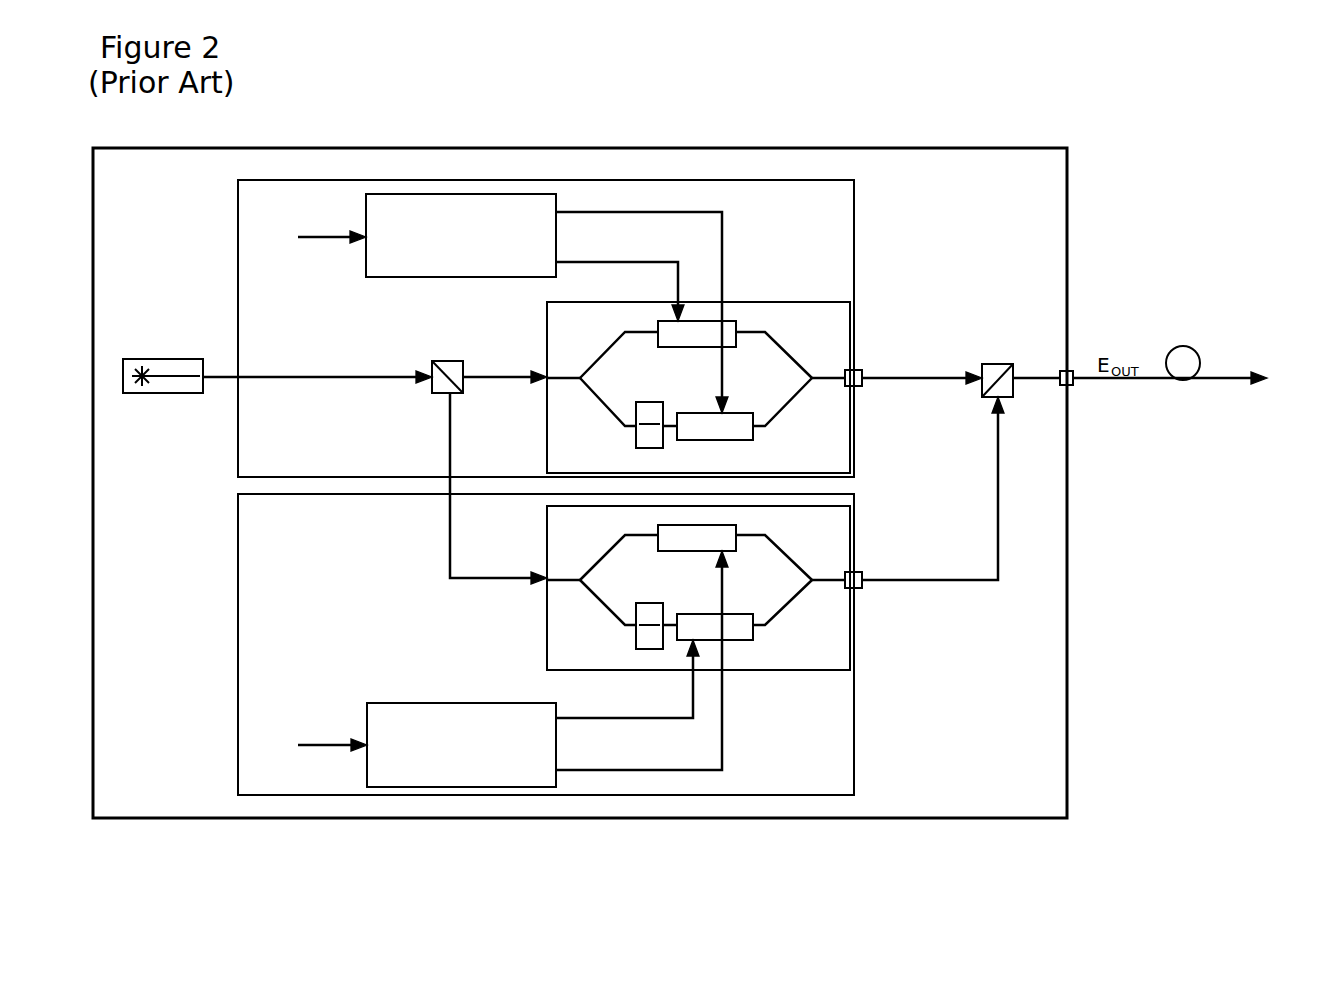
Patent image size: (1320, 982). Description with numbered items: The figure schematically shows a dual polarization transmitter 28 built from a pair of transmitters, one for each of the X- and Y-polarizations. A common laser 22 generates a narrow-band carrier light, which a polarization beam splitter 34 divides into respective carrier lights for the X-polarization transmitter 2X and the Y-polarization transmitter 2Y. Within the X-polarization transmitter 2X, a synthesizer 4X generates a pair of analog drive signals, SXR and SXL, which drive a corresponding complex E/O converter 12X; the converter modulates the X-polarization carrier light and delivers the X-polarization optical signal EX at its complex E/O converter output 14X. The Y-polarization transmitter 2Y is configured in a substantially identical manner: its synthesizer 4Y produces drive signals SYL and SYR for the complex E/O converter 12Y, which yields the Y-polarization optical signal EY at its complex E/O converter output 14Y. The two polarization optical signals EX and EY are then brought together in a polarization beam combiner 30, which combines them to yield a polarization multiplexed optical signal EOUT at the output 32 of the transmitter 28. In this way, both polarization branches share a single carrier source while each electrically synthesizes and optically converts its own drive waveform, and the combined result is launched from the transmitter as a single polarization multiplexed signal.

The dual polarization transmitter 28 is at (853, 148).
The common laser 22 is at (158, 359).
The polarization beam splitter 34 is at (448, 361).
The X-Polarization transmitter 2X is at (238, 228).
The Y-Polarization transmitter 2Y is at (238, 564).
The synthesizer 4X is at (461, 235).
The synthesizer 4Y is at (461, 745).
The complex E/O converter 12X is at (795, 302).
The complex E/O converter 12Y is at (795, 670).
The complex E/O converter output 14X is at (862, 386).
The complex E/O converter output 14Y is at (862, 588).
The polarization beam combiner 30 is at (993, 364).
The output 32 is at (1067, 386).